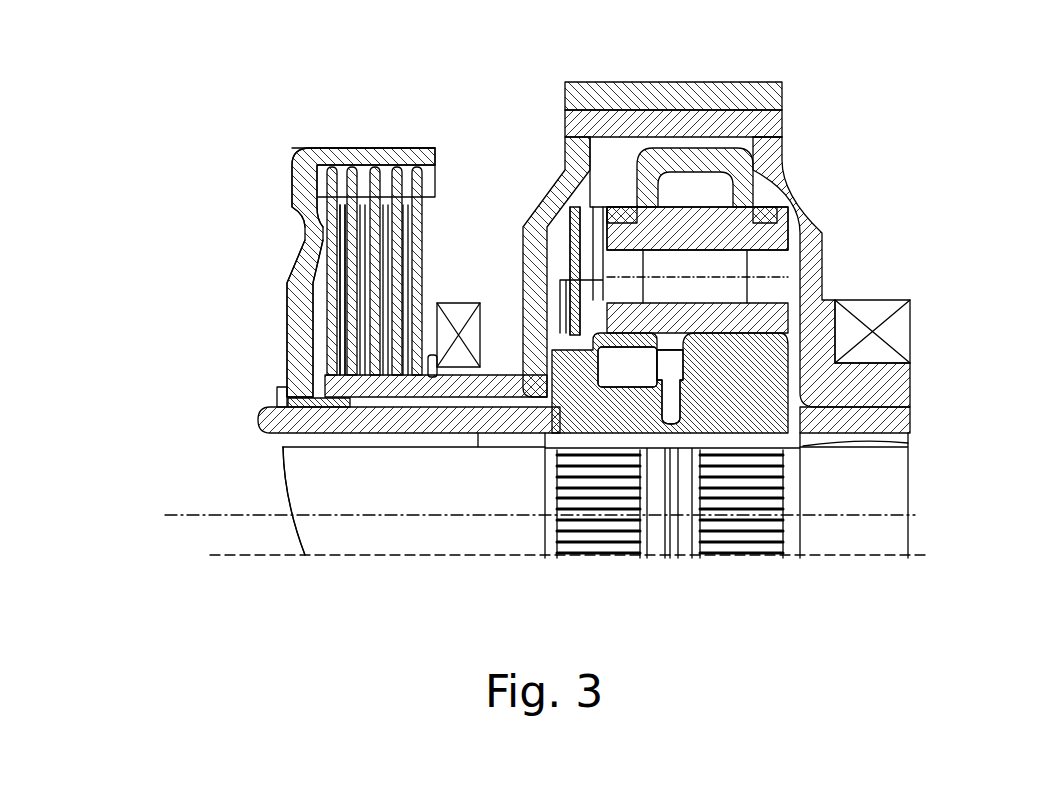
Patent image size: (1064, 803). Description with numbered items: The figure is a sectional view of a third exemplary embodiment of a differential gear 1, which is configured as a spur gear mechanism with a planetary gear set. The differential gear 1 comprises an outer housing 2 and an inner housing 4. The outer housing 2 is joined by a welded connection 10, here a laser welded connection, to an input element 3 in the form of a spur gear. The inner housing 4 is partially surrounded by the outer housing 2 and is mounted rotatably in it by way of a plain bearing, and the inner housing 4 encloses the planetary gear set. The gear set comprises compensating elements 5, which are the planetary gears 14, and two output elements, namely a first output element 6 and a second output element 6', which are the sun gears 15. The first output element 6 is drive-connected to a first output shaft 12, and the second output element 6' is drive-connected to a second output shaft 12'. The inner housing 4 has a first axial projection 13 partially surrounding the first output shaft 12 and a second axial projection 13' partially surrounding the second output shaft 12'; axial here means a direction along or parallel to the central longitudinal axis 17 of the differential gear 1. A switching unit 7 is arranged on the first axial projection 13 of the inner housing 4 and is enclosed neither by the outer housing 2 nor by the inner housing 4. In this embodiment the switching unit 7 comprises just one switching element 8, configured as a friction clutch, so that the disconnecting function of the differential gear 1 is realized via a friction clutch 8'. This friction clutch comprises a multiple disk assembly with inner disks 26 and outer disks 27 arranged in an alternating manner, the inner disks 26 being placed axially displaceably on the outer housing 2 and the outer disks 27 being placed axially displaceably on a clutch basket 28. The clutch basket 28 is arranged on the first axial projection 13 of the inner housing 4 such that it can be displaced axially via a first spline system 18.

The differential gear 1 is at (373, 128).
The outer housing 2 is at (563, 167).
The input element 3 is at (782, 87).
The inner housing 4 is at (780, 170).
The compensating element 5 is at (812, 253).
The first output element 6 is at (558, 312).
The second output element 6' is at (917, 476).
The switching unit 7 is at (284, 137).
The switching element 8 is at (308, 216).
The brake 8' is at (301, 216).
The welded connection 10 is at (790, 138).
The first output shaft 12 is at (541, 487).
The second output shaft 12' is at (868, 537).
The first axial projection 13 is at (436, 318).
The second axial projection 13' is at (919, 434).
The planetary gear 14 is at (812, 253).
The sun gear 15 is at (525, 418).
The central longitudinal axis 17 is at (430, 517).
The first spline system 18 is at (330, 433).
The inner disks 26 is at (343, 337).
The outer disks 27 is at (327, 253).
The clutch basket 28 is at (310, 165).